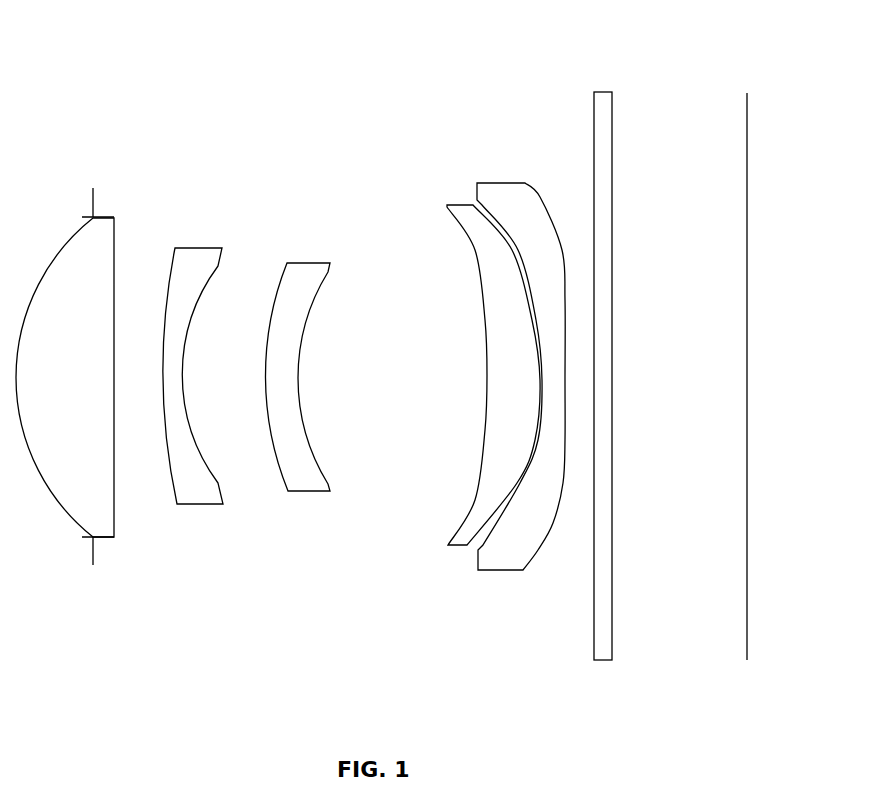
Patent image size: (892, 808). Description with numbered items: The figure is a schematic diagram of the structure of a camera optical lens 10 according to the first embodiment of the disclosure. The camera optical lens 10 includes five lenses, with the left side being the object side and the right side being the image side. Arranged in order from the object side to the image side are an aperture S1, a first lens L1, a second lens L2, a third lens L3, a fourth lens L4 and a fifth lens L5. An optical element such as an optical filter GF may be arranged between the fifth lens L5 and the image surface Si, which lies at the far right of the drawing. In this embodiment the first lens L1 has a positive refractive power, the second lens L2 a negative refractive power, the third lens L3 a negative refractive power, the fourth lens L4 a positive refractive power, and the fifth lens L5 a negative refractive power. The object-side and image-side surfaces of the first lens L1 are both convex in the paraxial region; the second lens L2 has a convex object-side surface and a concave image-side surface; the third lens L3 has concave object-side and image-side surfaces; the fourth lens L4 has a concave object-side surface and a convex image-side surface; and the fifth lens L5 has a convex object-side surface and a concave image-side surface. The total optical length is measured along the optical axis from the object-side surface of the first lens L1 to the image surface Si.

The camera optical lens 10 is at (387, 40).
The aperture S1 is at (97, 365).
The first lens L1 is at (69, 365).
The second lens L2 is at (193, 363).
The third lens L3 is at (297, 364).
The fourth lens L4 is at (490, 364).
The fifth lens L5 is at (521, 364).
The optical filter GF is at (601, 363).
The image surface Si is at (746, 363).